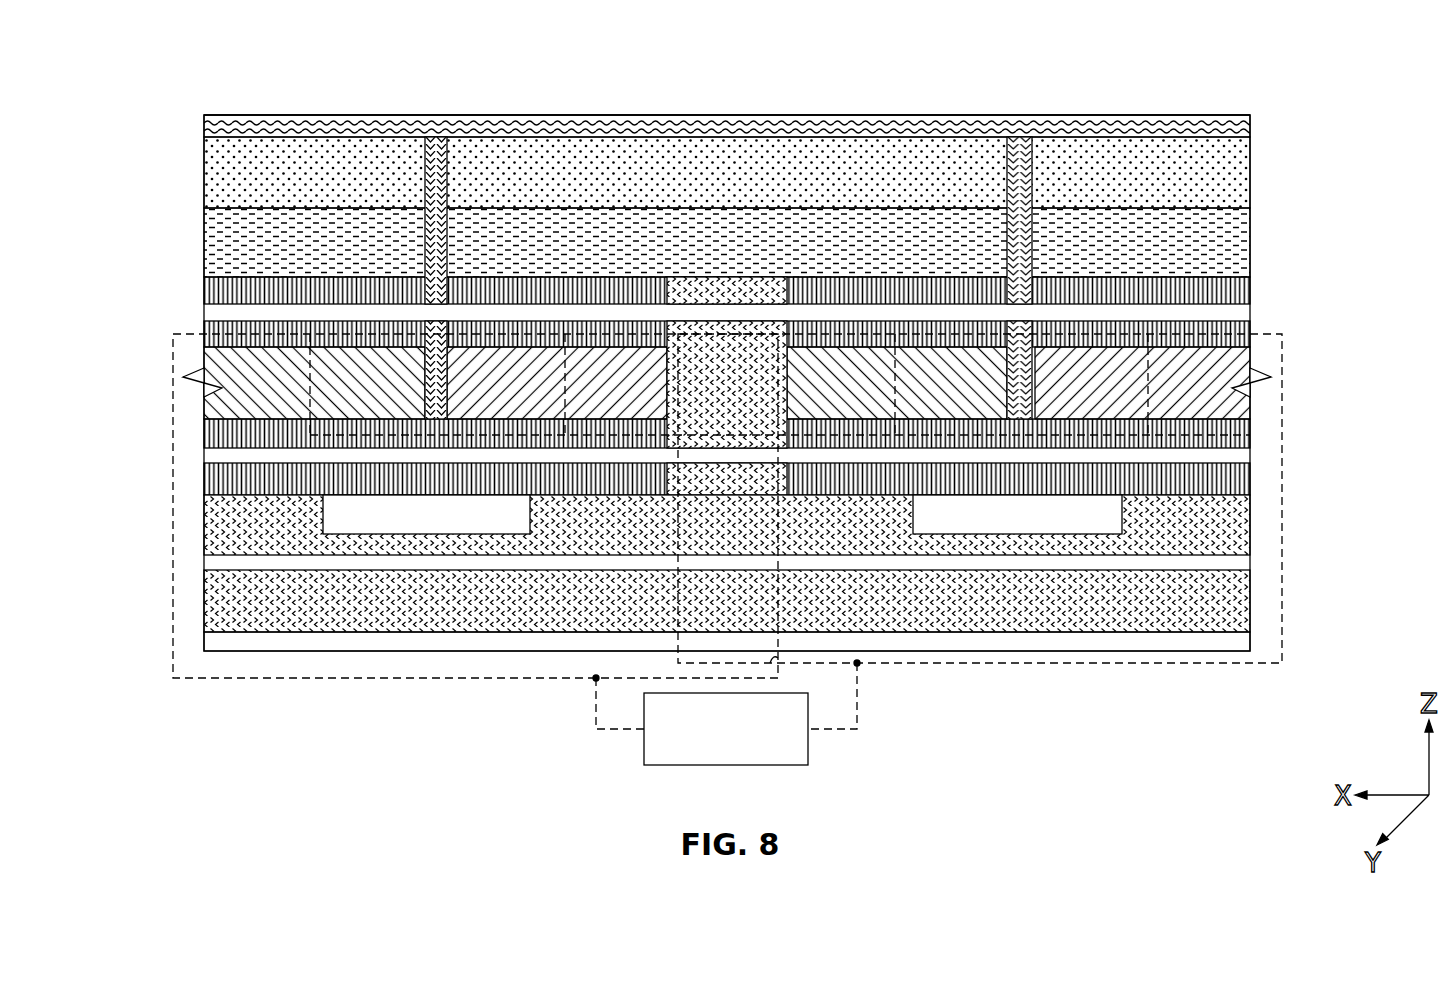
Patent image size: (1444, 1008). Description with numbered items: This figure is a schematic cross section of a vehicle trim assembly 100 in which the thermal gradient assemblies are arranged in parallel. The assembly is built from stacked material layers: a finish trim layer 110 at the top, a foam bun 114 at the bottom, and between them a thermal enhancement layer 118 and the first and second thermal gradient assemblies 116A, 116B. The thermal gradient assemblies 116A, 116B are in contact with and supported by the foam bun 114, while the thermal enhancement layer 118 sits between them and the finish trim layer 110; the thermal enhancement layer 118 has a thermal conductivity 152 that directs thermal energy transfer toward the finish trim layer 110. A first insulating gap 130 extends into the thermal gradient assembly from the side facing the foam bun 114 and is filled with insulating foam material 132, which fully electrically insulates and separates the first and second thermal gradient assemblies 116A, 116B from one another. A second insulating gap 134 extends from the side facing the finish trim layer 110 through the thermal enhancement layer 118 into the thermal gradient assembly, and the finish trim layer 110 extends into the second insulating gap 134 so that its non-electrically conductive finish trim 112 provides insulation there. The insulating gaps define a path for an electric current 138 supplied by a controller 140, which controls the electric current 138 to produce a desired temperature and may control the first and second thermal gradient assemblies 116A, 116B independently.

The vehicle trim assembly 100 is at (209, 94).
The finish trim layer 110 is at (1288, 115).
The non-electrically conductive finish trim 112 is at (1135, 115).
The foam bun 114 is at (1288, 495).
The first thermal gradient assembly 116A is at (1335, 277).
The second thermal gradient assembly 116B is at (155, 278).
The thermal enhancement layer 118 is at (1288, 277).
The first insulating gap 130 is at (693, 268).
The insulating foam material 132 is at (757, 277).
The second insulating gap 134 is at (420, 166).
The electric current 138 is at (1225, 668).
The controller 140 is at (745, 765).
The thermal conductivity 152 is at (1210, 652).